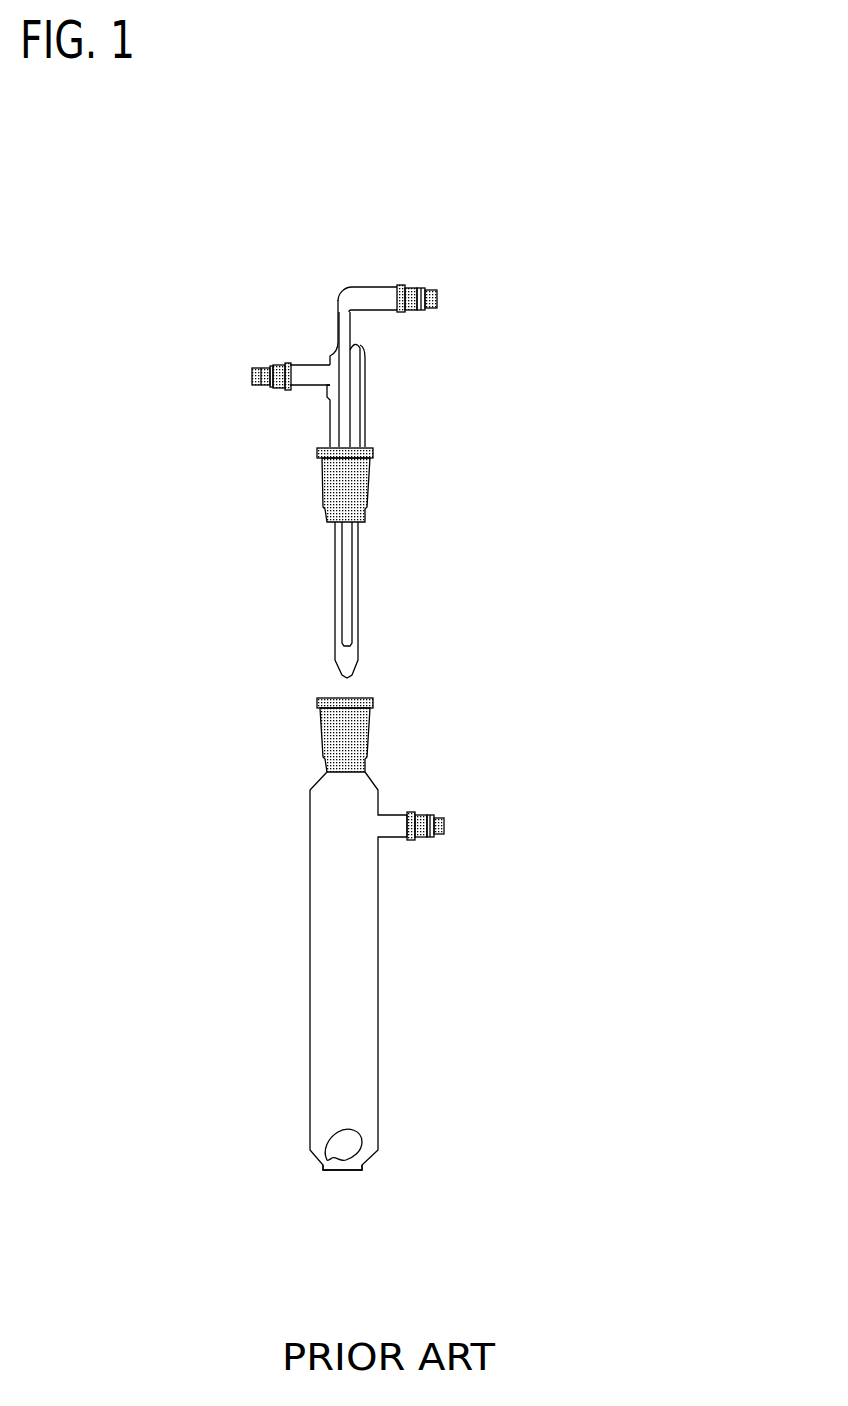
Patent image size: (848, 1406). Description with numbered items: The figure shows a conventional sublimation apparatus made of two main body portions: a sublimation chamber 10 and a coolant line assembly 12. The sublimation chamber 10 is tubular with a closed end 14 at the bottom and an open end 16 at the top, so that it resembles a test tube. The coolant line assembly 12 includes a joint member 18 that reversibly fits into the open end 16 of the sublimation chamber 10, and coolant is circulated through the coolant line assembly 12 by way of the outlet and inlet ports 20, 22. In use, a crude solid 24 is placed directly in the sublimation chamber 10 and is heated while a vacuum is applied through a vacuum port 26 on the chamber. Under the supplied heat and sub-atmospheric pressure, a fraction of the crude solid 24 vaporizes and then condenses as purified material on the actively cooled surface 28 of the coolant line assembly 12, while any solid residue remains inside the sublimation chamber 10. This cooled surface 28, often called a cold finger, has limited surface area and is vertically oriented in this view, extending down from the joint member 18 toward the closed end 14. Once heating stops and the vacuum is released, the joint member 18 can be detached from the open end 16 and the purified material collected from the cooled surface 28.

The sublimation chamber 10 is at (418, 1046).
The coolant line assembly 12 is at (425, 453).
The closed end 14 is at (342, 1172).
The open end 16 is at (322, 697).
The joint member 18 is at (368, 490).
The outlet port 20 is at (296, 358).
The inlet port 22 is at (392, 281).
The crude solid 24 is at (358, 1150).
The vacuum port 26 is at (445, 830).
The cooled surface 28 is at (347, 678).